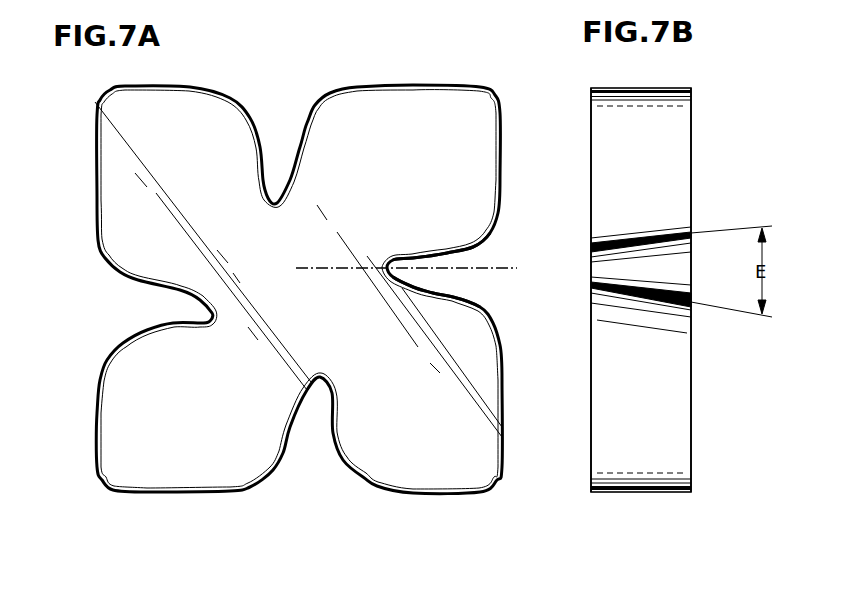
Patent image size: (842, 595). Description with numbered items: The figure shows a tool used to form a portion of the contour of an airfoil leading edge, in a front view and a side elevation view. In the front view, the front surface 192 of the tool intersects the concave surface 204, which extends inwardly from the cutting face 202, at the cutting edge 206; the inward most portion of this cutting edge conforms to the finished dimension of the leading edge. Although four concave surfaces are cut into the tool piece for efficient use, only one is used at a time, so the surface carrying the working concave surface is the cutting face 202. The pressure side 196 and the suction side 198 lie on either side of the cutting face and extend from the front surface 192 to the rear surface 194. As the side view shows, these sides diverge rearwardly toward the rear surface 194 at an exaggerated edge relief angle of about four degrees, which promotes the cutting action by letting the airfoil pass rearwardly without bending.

In FIG. 7A, the front surface 192 is at (446, 165).
In FIG. 7B, the front surface 192 is at (590, 178).
In FIG. 7B, the rear surface 194 is at (692, 178).
In FIG. 7B, the pressure side 196 is at (623, 492).
In FIG. 7B, the suction side 198 is at (645, 87).
In FIG. 7B, the cutting face 202 is at (663, 163).
In FIG. 7A, the concave surface 204 is at (456, 262).
In FIG. 7A, the cutting edge 206 is at (455, 300).